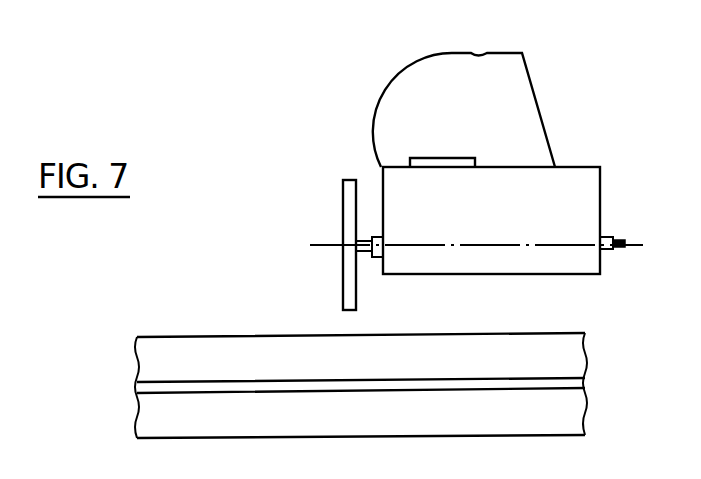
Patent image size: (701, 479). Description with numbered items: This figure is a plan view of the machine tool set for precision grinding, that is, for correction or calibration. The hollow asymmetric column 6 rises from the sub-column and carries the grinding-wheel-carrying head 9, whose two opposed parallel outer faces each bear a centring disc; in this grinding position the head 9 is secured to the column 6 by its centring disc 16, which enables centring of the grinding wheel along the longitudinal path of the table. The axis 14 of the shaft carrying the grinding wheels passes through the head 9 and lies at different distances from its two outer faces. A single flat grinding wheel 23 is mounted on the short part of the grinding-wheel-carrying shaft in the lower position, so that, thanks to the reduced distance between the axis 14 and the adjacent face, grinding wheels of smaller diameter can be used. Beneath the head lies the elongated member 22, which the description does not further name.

The hollow asymmetric column 6 is at (430, 78).
The grinding-wheel-carrying head 9 is at (572, 184).
The centring disc 16 is at (427, 160).
The axis of the shaft carrying the grinding wheels 14 is at (480, 258).
The single flat grinding wheel 23 is at (350, 282).
The bar 22 is at (220, 353).